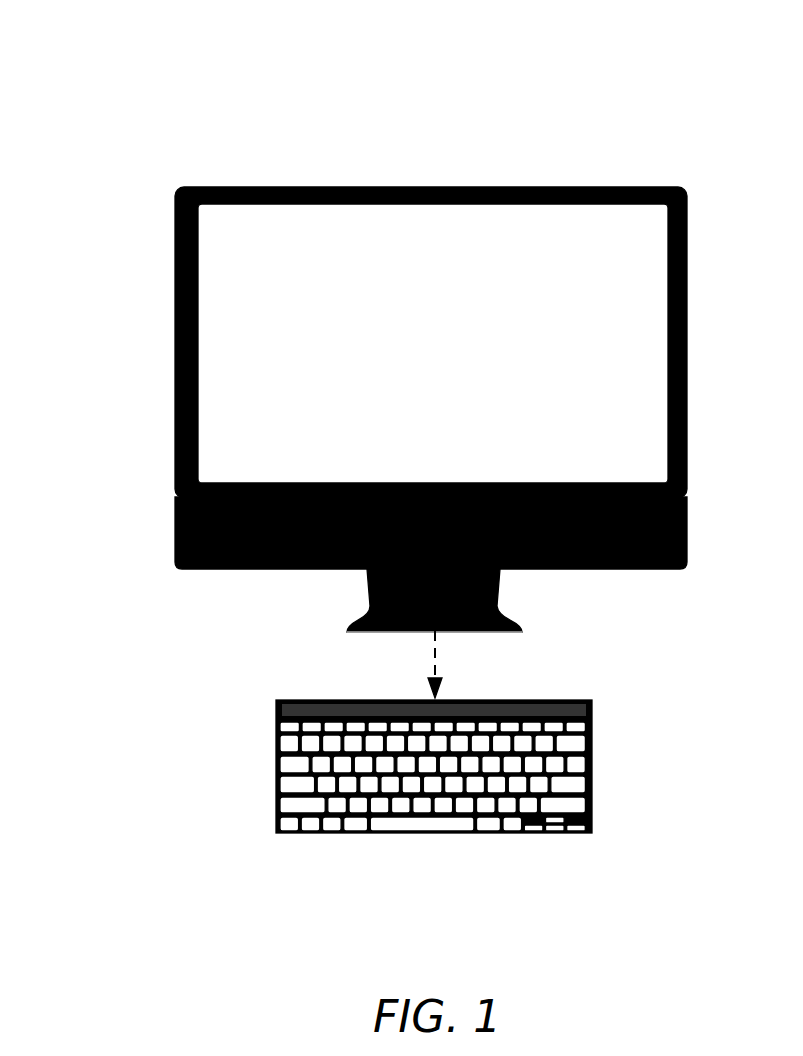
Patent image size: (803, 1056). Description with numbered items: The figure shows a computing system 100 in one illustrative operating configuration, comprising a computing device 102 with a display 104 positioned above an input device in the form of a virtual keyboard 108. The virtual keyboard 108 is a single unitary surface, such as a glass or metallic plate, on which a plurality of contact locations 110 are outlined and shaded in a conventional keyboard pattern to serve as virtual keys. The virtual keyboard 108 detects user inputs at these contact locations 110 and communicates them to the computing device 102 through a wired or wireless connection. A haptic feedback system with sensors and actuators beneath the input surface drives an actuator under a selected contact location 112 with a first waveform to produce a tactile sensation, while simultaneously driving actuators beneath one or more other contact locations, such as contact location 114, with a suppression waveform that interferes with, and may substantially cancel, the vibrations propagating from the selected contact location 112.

The computing system 100 is at (133, 53).
The computing device 102 is at (207, 527).
The display 104 is at (175, 250).
The virtual keyboard 108 is at (452, 761).
The contact locations 110 is at (600, 699).
The contact location 112 is at (348, 782).
The contact location 114 is at (357, 797).